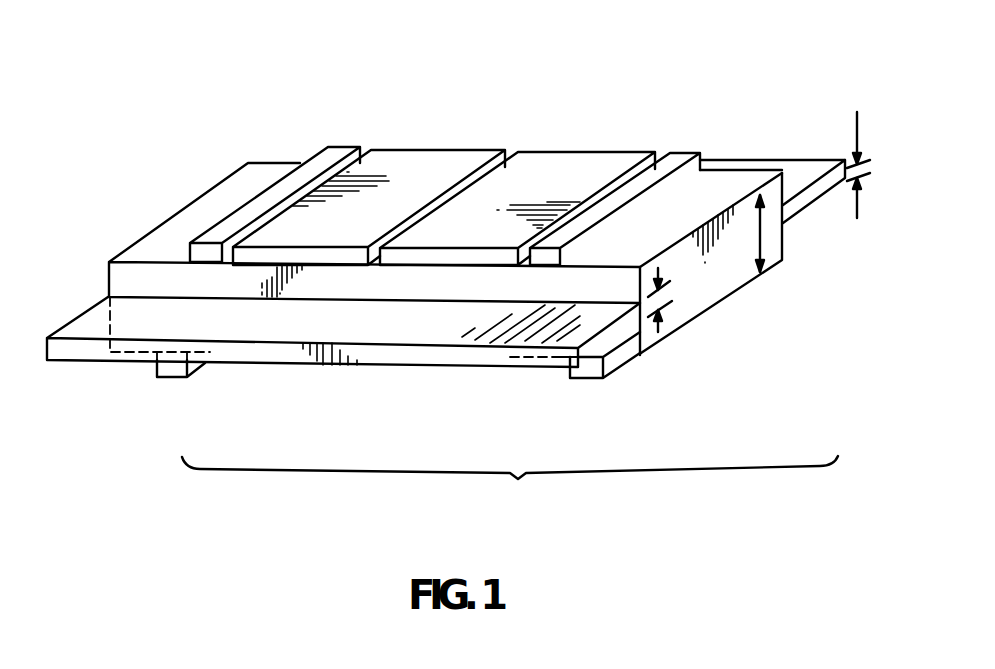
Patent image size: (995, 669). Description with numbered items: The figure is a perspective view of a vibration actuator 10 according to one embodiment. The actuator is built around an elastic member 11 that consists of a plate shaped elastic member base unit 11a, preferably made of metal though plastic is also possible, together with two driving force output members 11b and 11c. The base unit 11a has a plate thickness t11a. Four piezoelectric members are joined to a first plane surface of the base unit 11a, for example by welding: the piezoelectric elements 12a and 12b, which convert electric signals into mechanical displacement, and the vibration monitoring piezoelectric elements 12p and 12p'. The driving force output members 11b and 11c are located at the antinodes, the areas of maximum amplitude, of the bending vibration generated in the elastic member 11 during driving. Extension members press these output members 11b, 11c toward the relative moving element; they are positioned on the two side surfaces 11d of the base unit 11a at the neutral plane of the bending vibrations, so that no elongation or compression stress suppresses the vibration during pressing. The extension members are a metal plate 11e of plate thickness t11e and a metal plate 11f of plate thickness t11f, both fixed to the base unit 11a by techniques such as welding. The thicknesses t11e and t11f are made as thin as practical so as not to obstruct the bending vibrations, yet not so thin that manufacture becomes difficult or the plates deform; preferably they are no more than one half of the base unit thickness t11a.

The vibration actuator 10 is at (514, 85).
The elastic member 11 is at (510, 487).
The elastic member base unit 11a is at (709, 283).
The driving force output member 11b is at (175, 378).
The driving force output member 11c is at (568, 374).
The side surface 11d is at (786, 193).
The metal plate 11e is at (412, 327).
The metal plate 11f is at (812, 172).
The piezoelectric element 12a is at (400, 167).
The piezoelectric element 12b is at (573, 172).
The vibration monitoring piezoelectric element 12p is at (281, 169).
The vibration monitoring piezoelectric element 12p' is at (645, 170).
The plate thickness of the elastic member base unit t11a is at (760, 240).
The plate thickness of metal plate 11e t11e is at (640, 282).
The plate thickness of metal plate 11f t11f is at (862, 152).